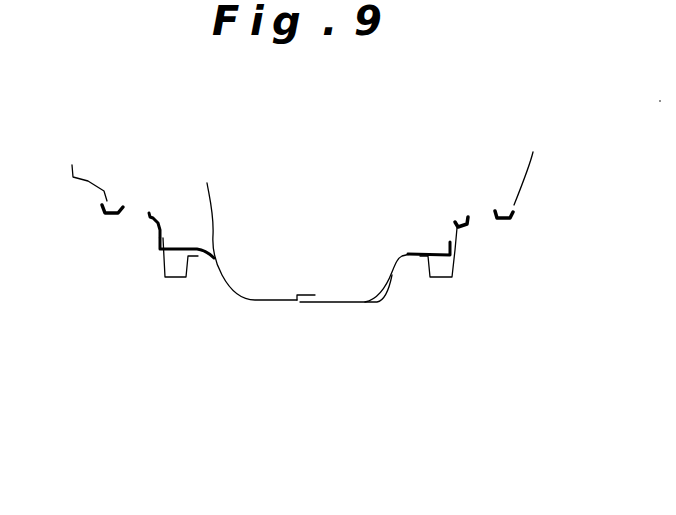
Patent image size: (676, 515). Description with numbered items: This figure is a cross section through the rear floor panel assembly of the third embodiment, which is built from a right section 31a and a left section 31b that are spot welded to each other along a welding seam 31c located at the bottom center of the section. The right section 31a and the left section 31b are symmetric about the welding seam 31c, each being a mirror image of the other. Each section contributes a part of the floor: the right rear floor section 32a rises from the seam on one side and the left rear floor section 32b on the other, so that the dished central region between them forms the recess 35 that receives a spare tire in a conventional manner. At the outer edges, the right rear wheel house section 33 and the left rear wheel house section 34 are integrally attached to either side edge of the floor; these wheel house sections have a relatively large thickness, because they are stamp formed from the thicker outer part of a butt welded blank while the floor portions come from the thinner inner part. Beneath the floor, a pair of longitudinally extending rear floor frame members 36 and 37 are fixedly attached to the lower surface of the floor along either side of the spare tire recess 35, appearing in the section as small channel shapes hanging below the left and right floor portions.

The right section 31a is at (220, 157).
The left section 31b is at (415, 138).
The welding seam 31c is at (308, 295).
The right rear floor section 32a is at (233, 226).
The left rear floor section 32b is at (400, 254).
The right rear wheel house section 33 is at (88, 182).
The left rear wheel house section 34 is at (462, 221).
The recess 35 is at (353, 302).
The rear floor frame member 36 is at (177, 278).
The rear floor frame member 37 is at (440, 277).